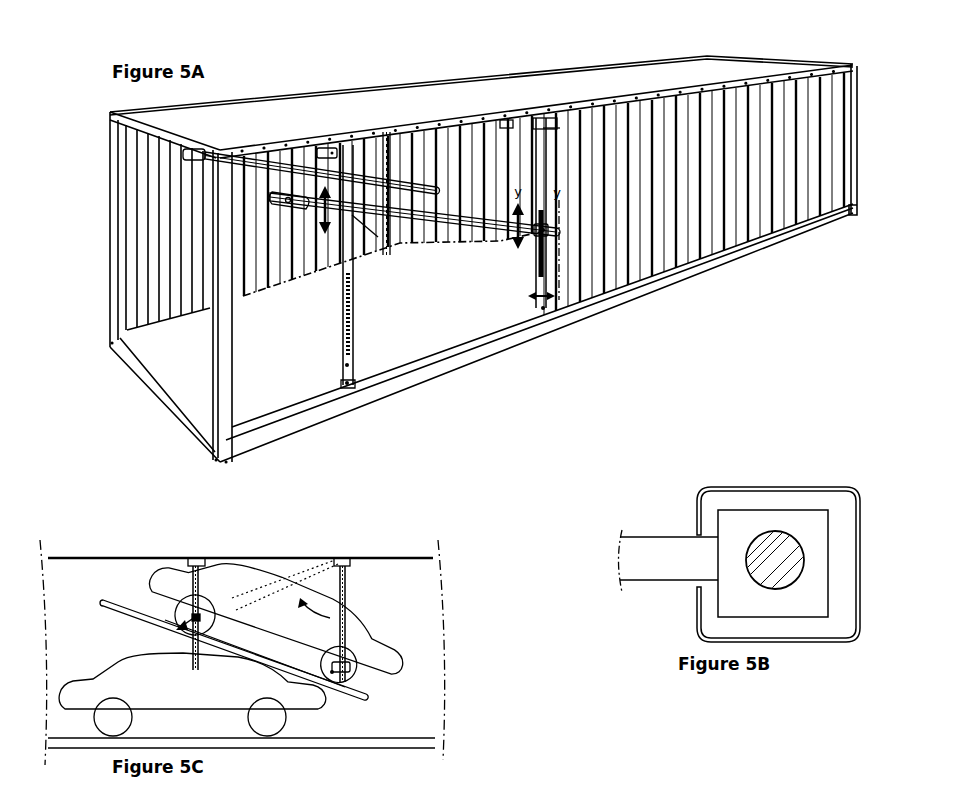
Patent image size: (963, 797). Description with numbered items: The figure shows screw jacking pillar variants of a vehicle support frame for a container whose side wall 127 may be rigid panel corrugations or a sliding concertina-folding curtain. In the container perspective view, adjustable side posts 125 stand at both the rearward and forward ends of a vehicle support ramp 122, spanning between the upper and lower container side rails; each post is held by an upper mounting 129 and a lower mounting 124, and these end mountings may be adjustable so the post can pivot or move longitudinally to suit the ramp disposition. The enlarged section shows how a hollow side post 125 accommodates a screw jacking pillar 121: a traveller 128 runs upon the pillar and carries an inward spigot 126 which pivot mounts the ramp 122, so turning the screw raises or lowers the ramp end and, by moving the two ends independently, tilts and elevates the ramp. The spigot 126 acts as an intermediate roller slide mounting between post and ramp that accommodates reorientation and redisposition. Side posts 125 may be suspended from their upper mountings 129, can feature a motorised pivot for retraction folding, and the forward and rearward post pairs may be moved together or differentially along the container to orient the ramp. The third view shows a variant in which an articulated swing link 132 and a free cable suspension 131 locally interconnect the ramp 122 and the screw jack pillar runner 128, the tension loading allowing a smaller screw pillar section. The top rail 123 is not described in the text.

In FIG. 5A, the screw jacking pillar 121 is at (343, 340).
In FIG. 5B, the screw jacking pillar 121 is at (785, 560).
In FIG. 5A, the vehicle support ramp 122 is at (467, 223).
In FIG. 5C, the vehicle support ramp 122 is at (247, 655).
In FIG. 5A, the top rail of container 123 is at (487, 113).
In FIG. 5A, the lower mounting 124 is at (350, 368).
In FIG. 5A, the adjustable side post 125 is at (352, 385).
In FIG. 5B, the adjustable side post 125 is at (860, 560).
In FIG. 5A, the inward spigot 126 is at (393, 257).
In FIG. 5B, the inward spigot 126 is at (665, 557).
In FIG. 5A, the container side wall 127 is at (688, 228).
In FIG. 5A, the traveller 128 is at (548, 232).
In FIG. 5B, the traveller 128 is at (742, 524).
In FIG. 5A, the upper mounting 129 is at (334, 140).
In FIG. 5C, the free cable suspension 131 is at (143, 598).
In FIG. 5C, the swing link 132 is at (283, 657).